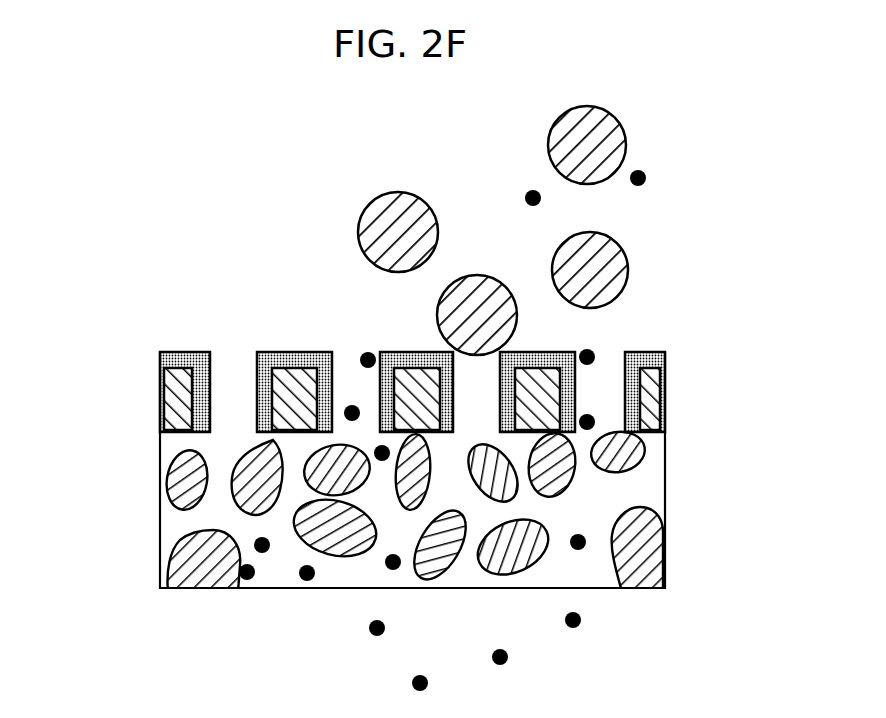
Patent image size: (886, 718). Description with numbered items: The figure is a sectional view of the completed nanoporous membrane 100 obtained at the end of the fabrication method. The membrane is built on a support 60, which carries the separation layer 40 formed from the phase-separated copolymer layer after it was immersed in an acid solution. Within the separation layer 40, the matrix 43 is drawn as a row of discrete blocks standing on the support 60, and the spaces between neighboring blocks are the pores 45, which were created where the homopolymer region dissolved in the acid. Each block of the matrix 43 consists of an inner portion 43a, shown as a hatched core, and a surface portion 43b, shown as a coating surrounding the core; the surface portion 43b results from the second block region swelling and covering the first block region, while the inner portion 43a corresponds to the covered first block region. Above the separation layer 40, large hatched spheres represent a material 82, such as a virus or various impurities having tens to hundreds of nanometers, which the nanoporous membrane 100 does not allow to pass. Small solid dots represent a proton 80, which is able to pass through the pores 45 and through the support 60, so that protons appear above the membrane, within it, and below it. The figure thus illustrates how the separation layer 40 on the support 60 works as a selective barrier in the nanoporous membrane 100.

The nanoporous membrane 100 is at (699, 270).
The material 82 is at (598, 141).
The proton 80 is at (245, 576).
The support 60 is at (680, 440).
The separation layer 40 is at (380, 361).
The matrix 43 is at (120, 358).
The inner portion 43a is at (160, 399).
The surface portion 43b is at (160, 357).
The pores 45 is at (234, 396).